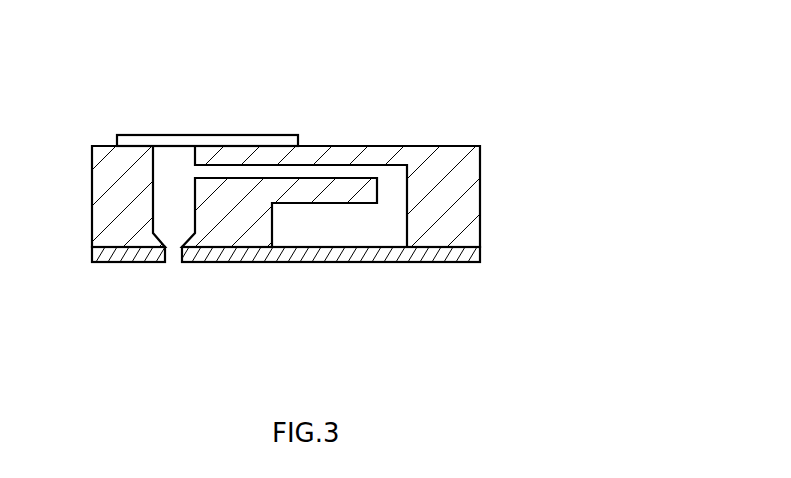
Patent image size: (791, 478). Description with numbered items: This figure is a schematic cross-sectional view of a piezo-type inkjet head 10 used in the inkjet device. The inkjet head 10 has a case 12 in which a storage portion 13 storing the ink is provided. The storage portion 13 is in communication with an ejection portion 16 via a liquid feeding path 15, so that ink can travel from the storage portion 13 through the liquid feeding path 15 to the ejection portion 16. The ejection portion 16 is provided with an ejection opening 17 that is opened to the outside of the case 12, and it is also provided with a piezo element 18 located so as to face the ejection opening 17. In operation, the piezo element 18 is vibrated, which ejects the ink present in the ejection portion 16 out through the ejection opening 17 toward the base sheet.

The inkjet head 10 is at (518, 82).
The case 12 is at (467, 170).
The storage portion 13 is at (341, 223).
The liquid feeding path 15 is at (301, 176).
The ejection portion 16 is at (169, 196).
The ejection opening 17 is at (173, 262).
The piezo element 18 is at (247, 140).